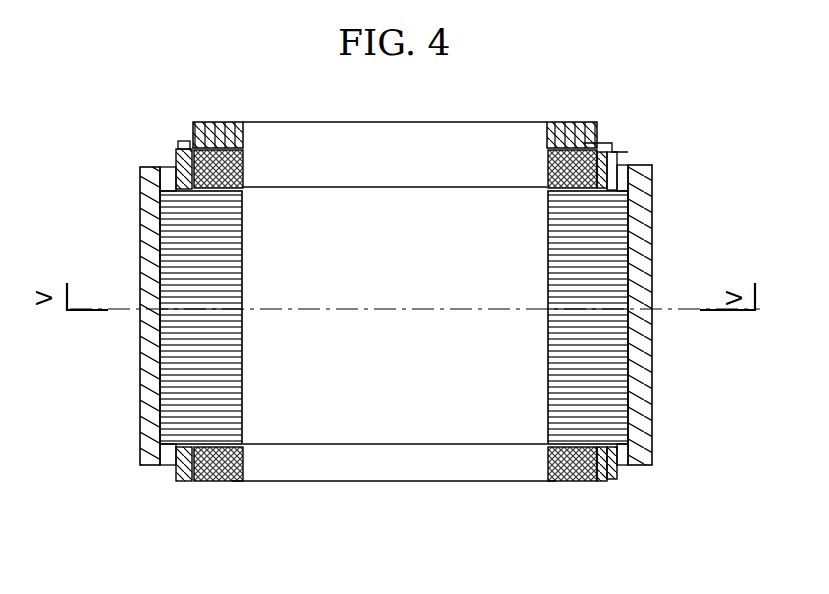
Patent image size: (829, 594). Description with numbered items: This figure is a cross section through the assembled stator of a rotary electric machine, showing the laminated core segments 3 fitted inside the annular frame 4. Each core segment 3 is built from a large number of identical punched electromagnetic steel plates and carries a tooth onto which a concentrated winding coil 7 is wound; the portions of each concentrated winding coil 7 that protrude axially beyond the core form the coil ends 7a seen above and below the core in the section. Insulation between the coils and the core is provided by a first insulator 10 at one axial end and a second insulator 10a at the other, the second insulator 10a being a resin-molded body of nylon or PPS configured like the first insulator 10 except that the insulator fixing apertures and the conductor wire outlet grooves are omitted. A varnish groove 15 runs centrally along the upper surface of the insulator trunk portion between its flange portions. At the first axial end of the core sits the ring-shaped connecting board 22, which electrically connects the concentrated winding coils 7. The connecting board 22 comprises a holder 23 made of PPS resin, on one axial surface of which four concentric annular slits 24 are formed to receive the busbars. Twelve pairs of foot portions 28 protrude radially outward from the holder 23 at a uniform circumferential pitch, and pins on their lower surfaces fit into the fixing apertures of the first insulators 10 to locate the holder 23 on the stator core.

The core segment 3 is at (620, 368).
The frame 4 is at (645, 407).
The concentrated winding coil 7 is at (191, 168).
The coil end 7a is at (556, 478).
The first insulator 10 is at (613, 151).
The second insulator 10a is at (621, 483).
The varnish groove 15 is at (602, 171).
The connecting board 22 is at (598, 113).
The holder 23 is at (601, 124).
The annular slit 24 is at (240, 138).
The foot portion 28 is at (183, 142).